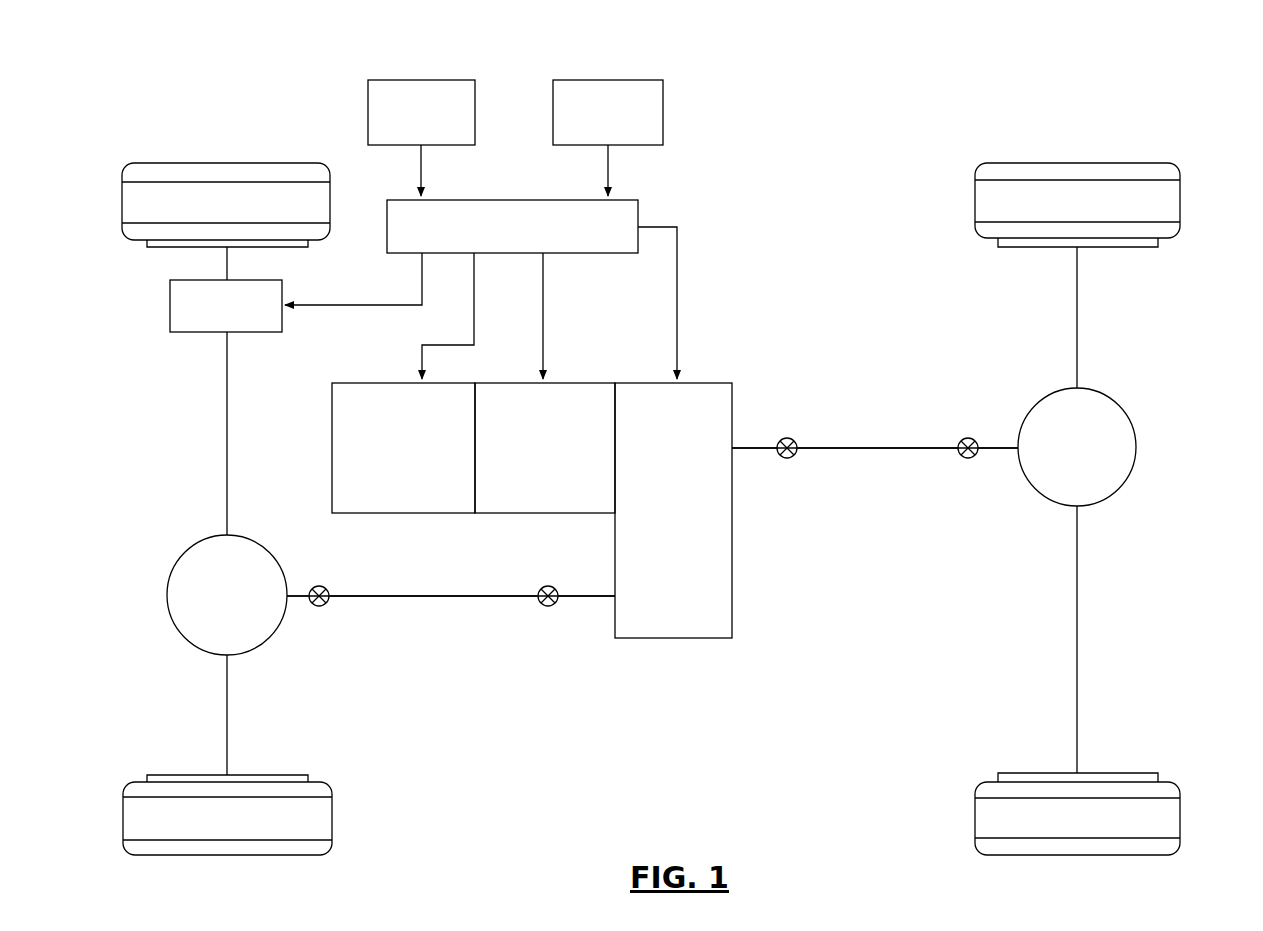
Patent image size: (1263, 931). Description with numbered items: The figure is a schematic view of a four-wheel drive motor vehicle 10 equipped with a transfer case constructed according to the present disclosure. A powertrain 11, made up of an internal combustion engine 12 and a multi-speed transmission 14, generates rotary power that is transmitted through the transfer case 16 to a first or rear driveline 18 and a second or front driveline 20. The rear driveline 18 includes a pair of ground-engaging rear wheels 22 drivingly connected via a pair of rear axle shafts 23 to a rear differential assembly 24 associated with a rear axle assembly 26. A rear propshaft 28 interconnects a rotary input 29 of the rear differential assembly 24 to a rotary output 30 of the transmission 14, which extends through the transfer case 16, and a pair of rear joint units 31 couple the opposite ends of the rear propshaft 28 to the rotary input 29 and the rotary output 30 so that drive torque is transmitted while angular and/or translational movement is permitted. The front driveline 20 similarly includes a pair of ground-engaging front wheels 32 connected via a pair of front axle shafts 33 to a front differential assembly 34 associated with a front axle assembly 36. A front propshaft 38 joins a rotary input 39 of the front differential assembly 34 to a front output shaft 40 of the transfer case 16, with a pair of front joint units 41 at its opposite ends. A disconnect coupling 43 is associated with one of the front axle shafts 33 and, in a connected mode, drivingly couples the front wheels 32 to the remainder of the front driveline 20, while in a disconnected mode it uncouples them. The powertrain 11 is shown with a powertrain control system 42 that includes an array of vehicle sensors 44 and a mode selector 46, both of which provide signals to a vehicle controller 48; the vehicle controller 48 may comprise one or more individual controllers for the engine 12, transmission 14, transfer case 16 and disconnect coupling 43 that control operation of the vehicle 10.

The four-wheel drive motor vehicle 10 is at (490, 672).
The powertrain 11 is at (334, 552).
The internal combustion engine 12 is at (401, 516).
The multi-speed transmission 14 is at (531, 516).
The transfer case 16 is at (716, 582).
The rear driveline 18 is at (893, 540).
The front driveline 20 is at (365, 624).
The rear wheels 22 is at (1180, 195).
The rear axle shafts 23 is at (1077, 305).
The rear differential assembly 24 is at (1118, 468).
The rear axle assembly 26 is at (1192, 409).
The rear propshaft 28 is at (927, 450).
The rotary input 29 is at (998, 446).
The rotary output 30 is at (755, 450).
The rear joint units 31 is at (788, 437).
The front wheels 32 is at (122, 200).
The front axle shafts 33 is at (227, 462).
The front differential assembly 34 is at (195, 600).
The front axle assembly 36 is at (148, 648).
The front propshaft 38 is at (447, 600).
The rotary input 39 is at (289, 600).
The front output shaft 40 is at (584, 600).
The front joint units 41 is at (321, 608).
The powertrain control system 42 is at (718, 392).
The disconnect coupling 43 is at (167, 305).
The vehicle sensors 44 is at (400, 80).
The mode selector 46 is at (605, 80).
The vehicle controller 48 is at (570, 253).